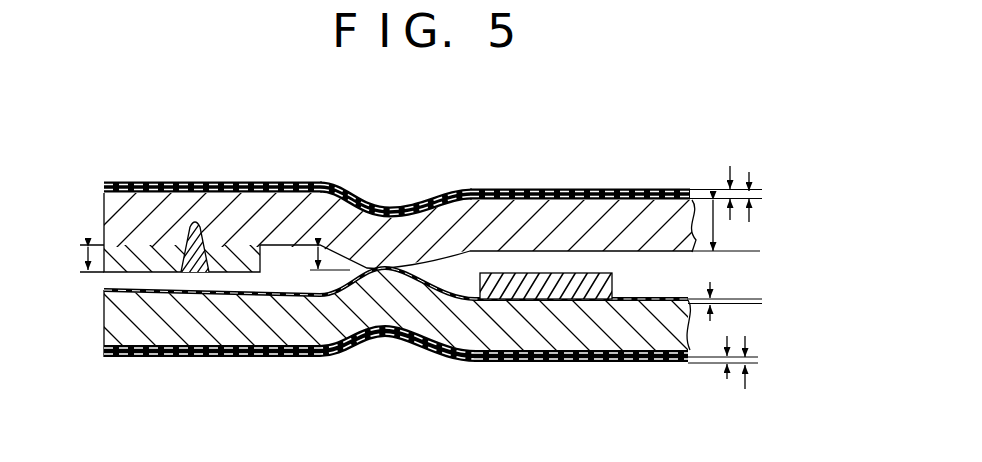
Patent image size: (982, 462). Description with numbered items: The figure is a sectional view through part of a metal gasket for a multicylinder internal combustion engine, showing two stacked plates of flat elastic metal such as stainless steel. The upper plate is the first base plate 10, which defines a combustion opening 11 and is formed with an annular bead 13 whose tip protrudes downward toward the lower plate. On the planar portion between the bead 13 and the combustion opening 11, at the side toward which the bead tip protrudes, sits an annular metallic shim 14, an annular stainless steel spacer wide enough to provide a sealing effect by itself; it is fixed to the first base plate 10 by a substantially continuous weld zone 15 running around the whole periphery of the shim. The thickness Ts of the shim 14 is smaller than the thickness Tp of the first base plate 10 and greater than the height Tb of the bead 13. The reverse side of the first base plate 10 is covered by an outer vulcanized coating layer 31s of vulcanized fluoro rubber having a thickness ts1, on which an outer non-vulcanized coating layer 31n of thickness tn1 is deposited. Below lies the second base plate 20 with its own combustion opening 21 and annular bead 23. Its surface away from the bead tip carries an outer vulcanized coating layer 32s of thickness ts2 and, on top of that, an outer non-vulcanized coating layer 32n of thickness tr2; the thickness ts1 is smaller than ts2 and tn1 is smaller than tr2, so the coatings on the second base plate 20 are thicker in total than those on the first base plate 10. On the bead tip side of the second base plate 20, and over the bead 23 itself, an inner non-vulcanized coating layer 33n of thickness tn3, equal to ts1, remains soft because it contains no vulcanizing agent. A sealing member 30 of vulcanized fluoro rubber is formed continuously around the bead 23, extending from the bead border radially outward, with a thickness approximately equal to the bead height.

The first base plate 10 is at (394, 194).
The combustion opening 11 is at (394, 194).
The annular bead 13 is at (400, 211).
The annular metallic shim 14 is at (104, 210).
The weld zone 15 is at (198, 222).
The second base plate 20 is at (428, 332).
The combustion opening 21 is at (104, 327).
The annular bead 23 is at (395, 307).
The sealing member 30 is at (613, 280).
The outer non-vulcanized coating layer 31n is at (470, 190).
The outer vulcanized coating layer 31s is at (497, 189).
The outer non-vulcanized coating layer 32n is at (490, 365).
The outer vulcanized coating layer 32s is at (520, 363).
The inner non-vulcanized coating layer 33n is at (690, 302).
The shim thickness Ts is at (74, 258).
The bead height Tb is at (313, 263).
The first base plate thickness Tp is at (741, 229).
The thickness of outer non-vulcanized coating layer tn1 is at (740, 182).
The thickness of outer vulcanized coating layer ts1 is at (760, 197).
The thickness of inner non-vulcanized coating layer tn3 is at (670, 302).
The thickness of outer vulcanized coating layer ts2 is at (747, 340).
The thickness of outer non-vulcanized coating layer tr2 is at (760, 370).